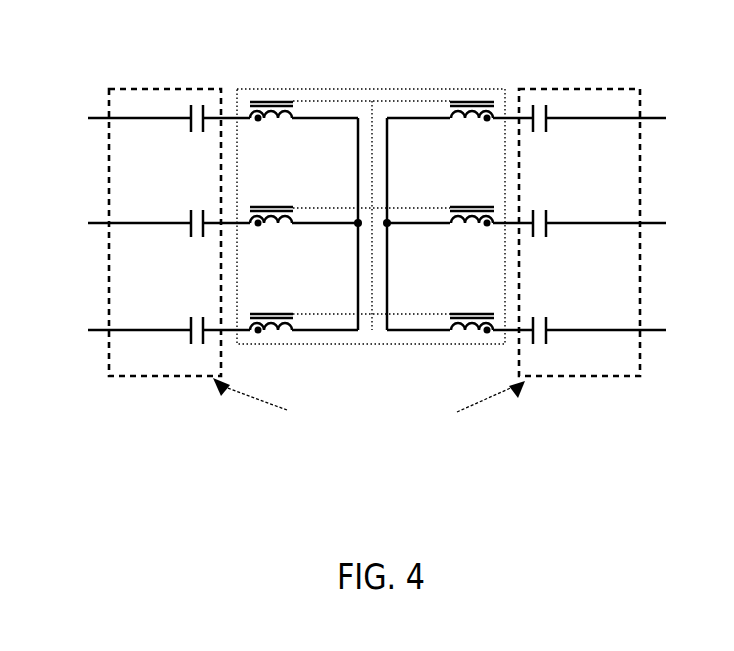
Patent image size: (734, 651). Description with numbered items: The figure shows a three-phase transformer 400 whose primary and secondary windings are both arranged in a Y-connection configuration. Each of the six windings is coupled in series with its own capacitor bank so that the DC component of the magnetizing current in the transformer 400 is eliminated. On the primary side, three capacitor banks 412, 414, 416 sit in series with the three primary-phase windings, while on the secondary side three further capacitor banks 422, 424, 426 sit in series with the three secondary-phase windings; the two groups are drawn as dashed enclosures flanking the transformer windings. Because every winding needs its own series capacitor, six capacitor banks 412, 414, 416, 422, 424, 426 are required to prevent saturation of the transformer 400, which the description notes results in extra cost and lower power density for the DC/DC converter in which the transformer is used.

The three-phase transformer 400 is at (400, 50).
The capacitor bank 412 is at (182, 107).
The capacitor bank 414 is at (186, 212).
The capacitor bank 416 is at (186, 318).
The capacitor bank 422 is at (553, 106).
The capacitor bank 424 is at (553, 214).
The capacitor bank 426 is at (553, 322).